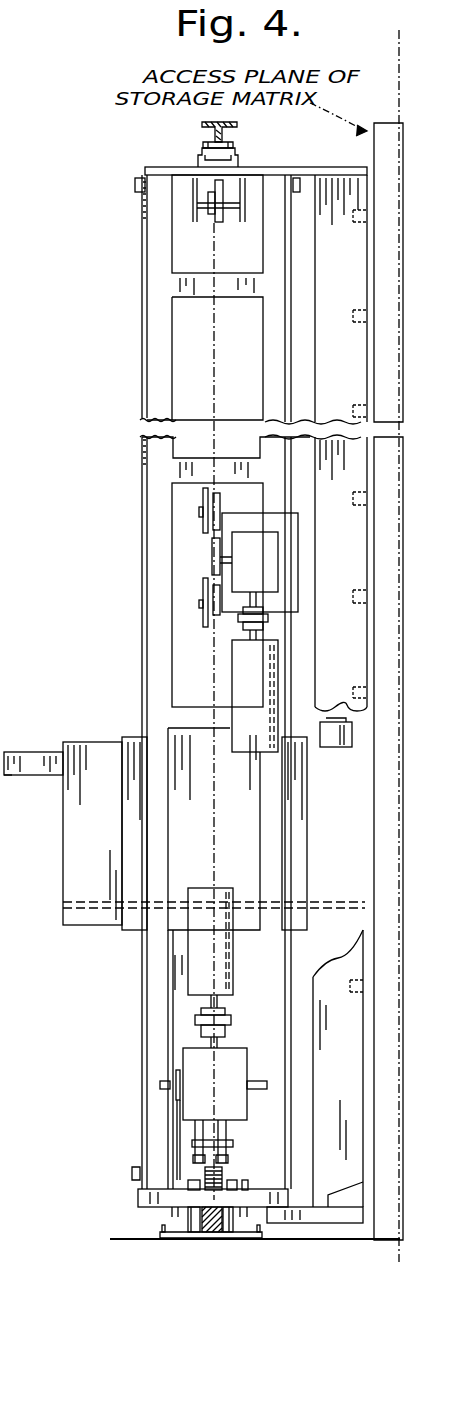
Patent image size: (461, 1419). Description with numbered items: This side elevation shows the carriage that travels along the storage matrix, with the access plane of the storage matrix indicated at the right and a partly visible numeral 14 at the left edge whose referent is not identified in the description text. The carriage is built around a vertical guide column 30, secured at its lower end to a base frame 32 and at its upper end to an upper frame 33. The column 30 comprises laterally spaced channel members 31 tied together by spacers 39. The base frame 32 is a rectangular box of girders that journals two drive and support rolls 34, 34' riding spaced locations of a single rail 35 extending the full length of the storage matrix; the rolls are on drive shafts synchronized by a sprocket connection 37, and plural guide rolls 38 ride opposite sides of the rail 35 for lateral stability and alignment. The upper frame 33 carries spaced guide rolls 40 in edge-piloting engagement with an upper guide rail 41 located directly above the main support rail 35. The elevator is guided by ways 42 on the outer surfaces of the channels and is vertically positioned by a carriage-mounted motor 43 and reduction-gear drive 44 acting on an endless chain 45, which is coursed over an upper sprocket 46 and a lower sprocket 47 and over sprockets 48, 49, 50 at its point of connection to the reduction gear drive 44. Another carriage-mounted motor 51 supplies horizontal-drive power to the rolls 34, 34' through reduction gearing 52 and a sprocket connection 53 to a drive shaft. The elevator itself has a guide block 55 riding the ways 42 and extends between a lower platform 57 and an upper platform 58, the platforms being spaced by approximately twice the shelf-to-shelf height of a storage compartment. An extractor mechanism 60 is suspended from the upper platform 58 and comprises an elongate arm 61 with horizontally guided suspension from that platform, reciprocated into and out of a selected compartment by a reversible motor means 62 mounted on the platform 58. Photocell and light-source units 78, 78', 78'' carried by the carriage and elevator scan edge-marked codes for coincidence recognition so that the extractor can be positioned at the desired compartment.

The storage matrix 14 is at (13, 531).
The vertical guide column 30 is at (140, 391).
The channel members 31 is at (302, 273).
The base frame 32 is at (150, 1211).
The upper frame 33 is at (282, 166).
The drive and support roll 34 is at (196, 1249).
The drive and support roll 34' is at (23, 1141).
The rail 35 is at (218, 1238).
The sprocket connection 37 is at (244, 1184).
The guide rolls 38 is at (187, 1240).
The spacers 39 is at (203, 292).
The guide rolls 40 is at (198, 147).
The upper guide rail 41 is at (200, 123).
The ways 42 is at (291, 455).
The motor 43 is at (257, 702).
The reduction-gear drive 44 is at (257, 573).
The endless chain 45 is at (222, 315).
The upper sprocket 46 is at (222, 222).
The lower sprocket 47 is at (217, 1174).
The sprocket 48 is at (220, 502).
The sprocket 49 is at (212, 550).
The sprocket 50 is at (220, 620).
The motor 51 is at (213, 958).
The reduction gearing 52 is at (217, 1092).
The sprocket connection 53 is at (181, 1114).
The guide block 55 is at (127, 808).
The lower platform 57 is at (80, 912).
The upper platform 58 is at (87, 740).
The extractor mechanism 60 is at (18, 776).
The elongate arm 61 is at (27, 762).
The reversible motor means 62 is at (338, 720).
The photocell and light-source unit 78 is at (315, 1076).
The photocell and light-source unit 78' is at (349, 664).
The photocell and light-source unit 78'' is at (347, 572).